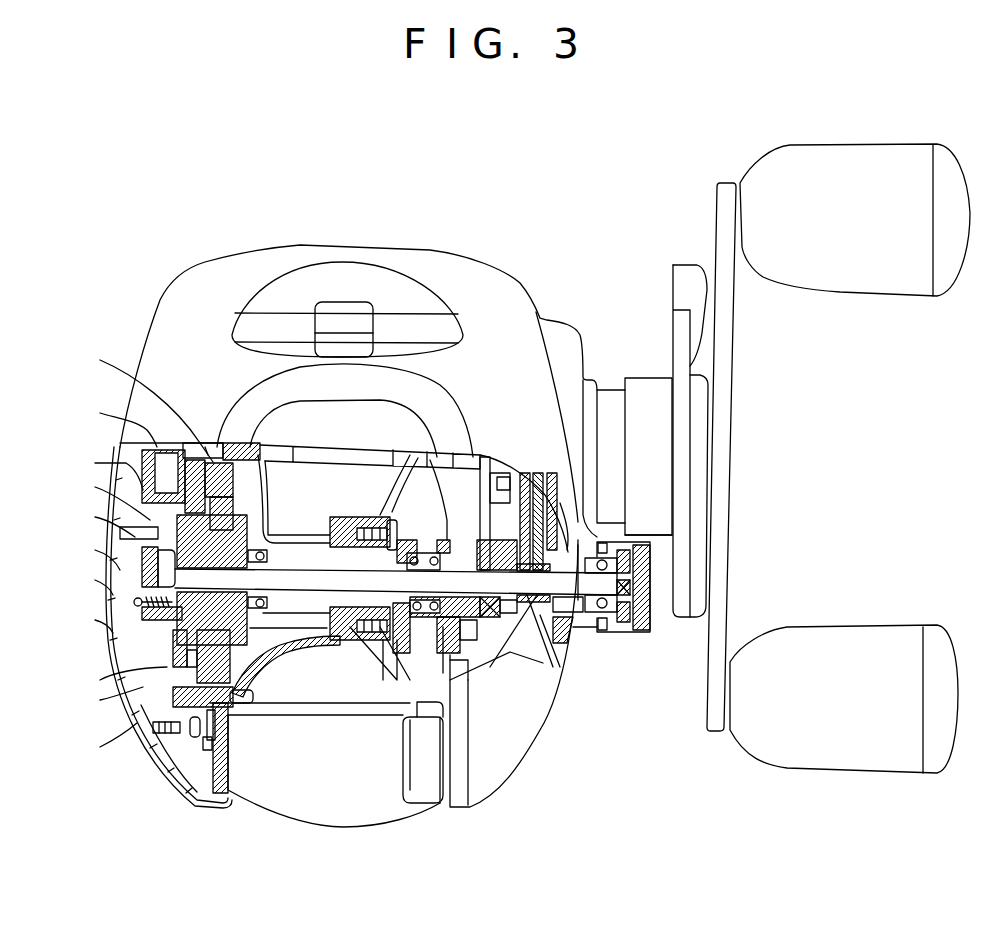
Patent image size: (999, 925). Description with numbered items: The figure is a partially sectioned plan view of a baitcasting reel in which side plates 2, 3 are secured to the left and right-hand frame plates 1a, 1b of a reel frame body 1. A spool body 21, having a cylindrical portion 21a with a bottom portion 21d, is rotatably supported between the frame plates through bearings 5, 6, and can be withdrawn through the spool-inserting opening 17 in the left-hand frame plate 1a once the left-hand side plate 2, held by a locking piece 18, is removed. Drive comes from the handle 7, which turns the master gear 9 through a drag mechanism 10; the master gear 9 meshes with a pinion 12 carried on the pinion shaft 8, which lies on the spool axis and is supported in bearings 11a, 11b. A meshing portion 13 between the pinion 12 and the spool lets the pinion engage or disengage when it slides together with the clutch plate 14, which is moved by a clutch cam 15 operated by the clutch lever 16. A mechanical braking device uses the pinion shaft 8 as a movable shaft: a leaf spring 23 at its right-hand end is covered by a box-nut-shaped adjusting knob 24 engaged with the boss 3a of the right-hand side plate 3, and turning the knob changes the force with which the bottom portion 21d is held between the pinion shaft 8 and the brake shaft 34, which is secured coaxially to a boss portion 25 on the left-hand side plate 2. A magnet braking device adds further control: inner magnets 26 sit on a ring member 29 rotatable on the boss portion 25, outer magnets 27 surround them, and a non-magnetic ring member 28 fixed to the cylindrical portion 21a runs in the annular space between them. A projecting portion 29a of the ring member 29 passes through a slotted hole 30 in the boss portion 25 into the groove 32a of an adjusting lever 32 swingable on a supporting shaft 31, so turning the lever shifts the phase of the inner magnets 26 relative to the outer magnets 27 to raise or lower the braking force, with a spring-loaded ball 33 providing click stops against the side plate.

The reel frame body 1 is at (447, 807).
The left-hand frame plate 1a is at (217, 807).
The right-hand frame plate 1b is at (463, 800).
The left-hand side plate 2 is at (123, 698).
The right-hand side plate 3 is at (520, 763).
The boss 3a is at (680, 553).
The bearing 5 is at (255, 465).
The bearing 6 is at (395, 520).
The handle 7 is at (730, 575).
The pinion shaft 8 is at (540, 660).
The master gear 9 is at (530, 585).
The drag mechanism 10 is at (560, 513).
The bearing 11a is at (472, 677).
The bearing 11b is at (588, 630).
The pinion 12 is at (498, 567).
The meshing portion 13 is at (407, 473).
The clutch plate 14 is at (470, 627).
The clutch cam 15 is at (463, 652).
The clutch lever 16 is at (317, 810).
The spool-inserting opening 17 is at (266, 717).
The locking piece 18 is at (183, 780).
The spool body 21 is at (307, 510).
The cylindrical portion 21a is at (313, 520).
The bottom portion 21d is at (392, 702).
The leaf spring 23 is at (622, 635).
The adjusting knob 24 is at (650, 620).
The boss portion 25 is at (143, 712).
The inner magnets 26 is at (140, 513).
The outer magnets 27 is at (143, 475).
The ring member 28 is at (205, 430).
The ring member 29 is at (160, 653).
The projecting portion 29a is at (133, 547).
The slotted hole 30 is at (143, 497).
The supporting shaft 31 is at (127, 523).
The adjusting lever 32 is at (160, 440).
The groove 32a is at (137, 570).
The ball 33 is at (133, 610).
The brake shaft 34 is at (343, 577).